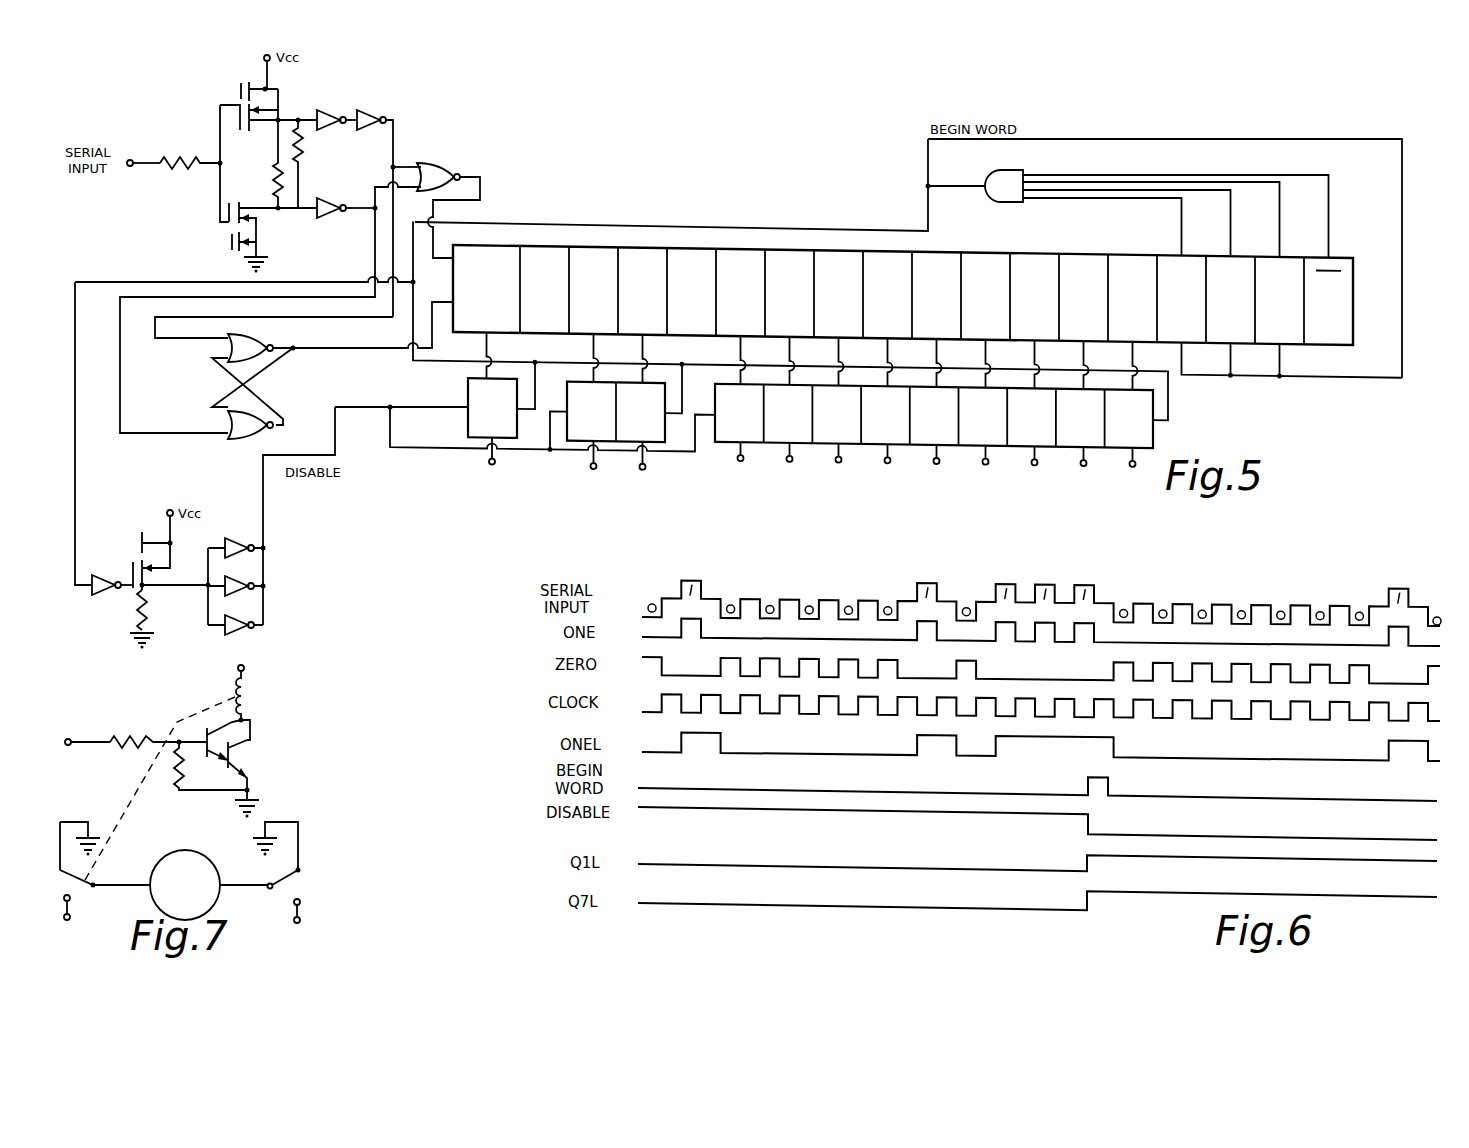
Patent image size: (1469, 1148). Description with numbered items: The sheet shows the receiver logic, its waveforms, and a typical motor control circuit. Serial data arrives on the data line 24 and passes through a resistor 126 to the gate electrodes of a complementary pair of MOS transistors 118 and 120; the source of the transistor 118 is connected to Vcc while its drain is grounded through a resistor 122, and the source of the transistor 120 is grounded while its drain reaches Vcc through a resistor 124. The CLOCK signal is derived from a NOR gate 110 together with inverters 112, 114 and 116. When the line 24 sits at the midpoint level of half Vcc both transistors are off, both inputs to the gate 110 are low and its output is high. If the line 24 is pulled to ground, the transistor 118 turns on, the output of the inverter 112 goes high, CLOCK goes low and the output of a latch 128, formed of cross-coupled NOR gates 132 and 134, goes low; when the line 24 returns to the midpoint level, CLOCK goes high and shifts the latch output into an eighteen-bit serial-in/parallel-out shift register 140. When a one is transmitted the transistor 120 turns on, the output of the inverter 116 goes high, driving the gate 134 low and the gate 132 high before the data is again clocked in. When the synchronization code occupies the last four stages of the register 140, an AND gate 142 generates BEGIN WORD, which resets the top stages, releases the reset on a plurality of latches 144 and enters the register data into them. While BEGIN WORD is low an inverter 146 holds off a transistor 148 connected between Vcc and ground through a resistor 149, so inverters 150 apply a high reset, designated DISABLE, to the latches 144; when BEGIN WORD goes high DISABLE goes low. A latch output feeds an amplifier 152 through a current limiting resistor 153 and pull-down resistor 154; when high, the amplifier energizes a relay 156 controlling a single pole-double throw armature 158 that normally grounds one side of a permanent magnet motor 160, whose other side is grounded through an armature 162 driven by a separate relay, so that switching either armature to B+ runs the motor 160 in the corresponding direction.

In FIG. 5, the data line 24 is at (166, 170).
In FIG. 5, the NOR gate 110 is at (447, 166).
In FIG. 5, the inverter 112 is at (364, 125).
In FIG. 5, the inverter 114 is at (323, 116).
In FIG. 5, the inverter 116 is at (323, 203).
In FIG. 5, the MOS transistor 118 is at (234, 89).
In FIG. 5, the MOS transistor 120 is at (222, 242).
In FIG. 5, the resistor 122 is at (302, 150).
In FIG. 5, the resistor 124 is at (274, 181).
In FIG. 5, the resistor 126 is at (178, 158).
In FIG. 5, the latch 128 is at (317, 376).
In FIG. 5, the NOR gate 132 is at (262, 358).
In FIG. 5, the NOR gate 134 is at (258, 437).
In FIG. 5, the shift register 140 is at (510, 245).
In FIG. 5, the AND gate 142 is at (1013, 201).
In FIG. 5, the latches 144 is at (1155, 430).
In FIG. 5, the inverter 146 is at (100, 578).
In FIG. 5, the transistor 148 is at (154, 577).
In FIG. 5, the resistor 149 is at (150, 612).
In FIG. 5, the inverters 150 is at (250, 604).
In FIG. 7, the amplifier 152 is at (255, 757).
In FIG. 7, the current limiting resistor 153 is at (122, 750).
In FIG. 7, the pull-down resistor 154 is at (172, 778).
In FIG. 7, the relay 156 is at (248, 704).
In FIG. 7, the armature 158 is at (95, 882).
In FIG. 7, the permanent magnet motor 160 is at (185, 850).
In FIG. 7, the armature 162 is at (285, 882).